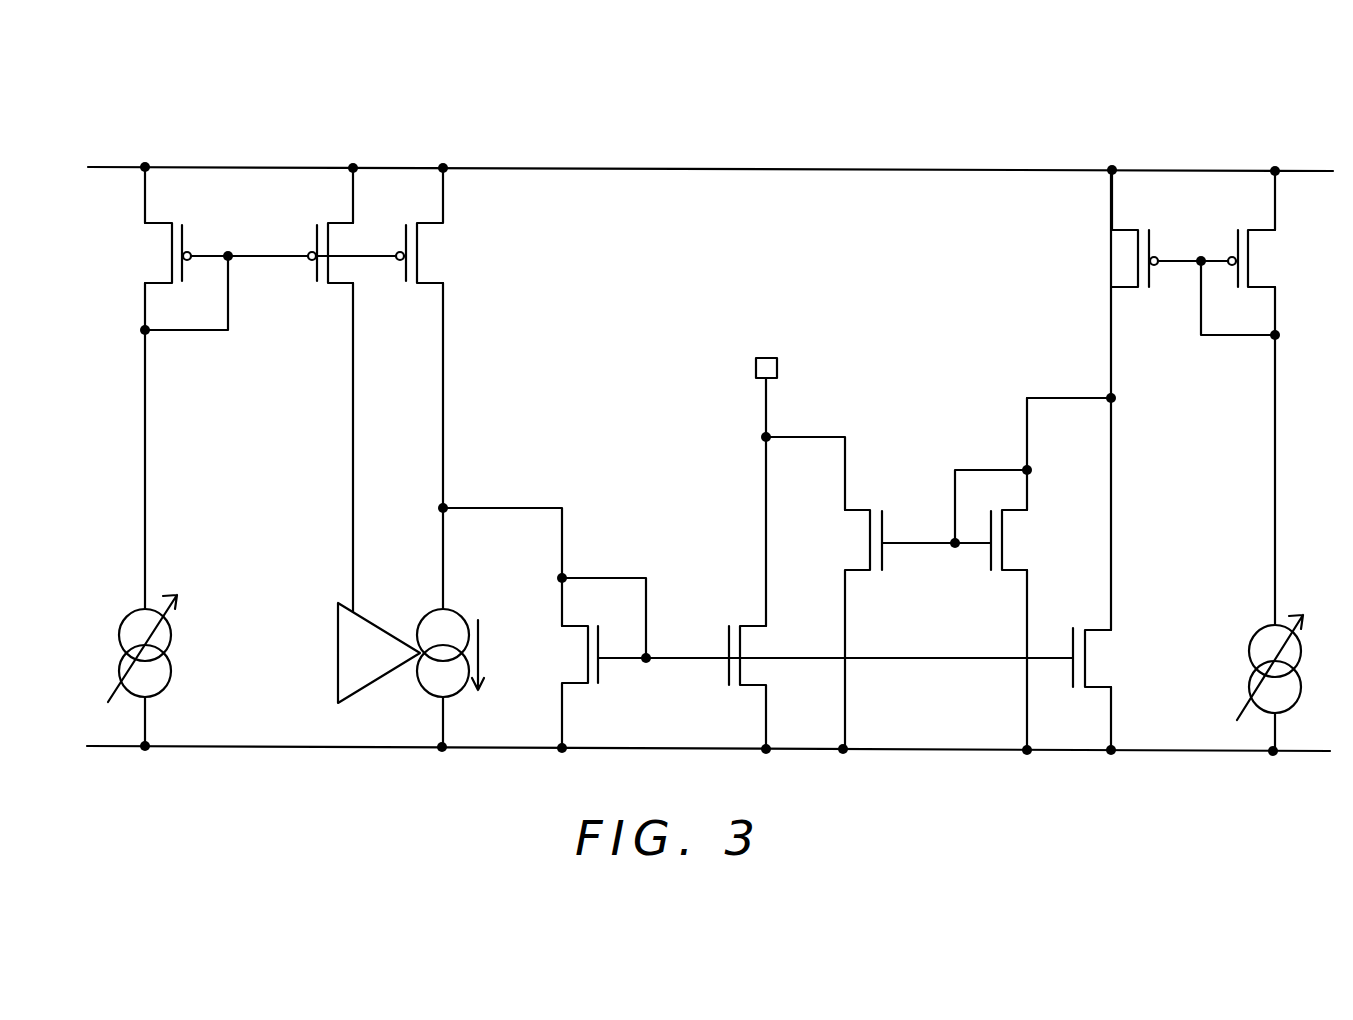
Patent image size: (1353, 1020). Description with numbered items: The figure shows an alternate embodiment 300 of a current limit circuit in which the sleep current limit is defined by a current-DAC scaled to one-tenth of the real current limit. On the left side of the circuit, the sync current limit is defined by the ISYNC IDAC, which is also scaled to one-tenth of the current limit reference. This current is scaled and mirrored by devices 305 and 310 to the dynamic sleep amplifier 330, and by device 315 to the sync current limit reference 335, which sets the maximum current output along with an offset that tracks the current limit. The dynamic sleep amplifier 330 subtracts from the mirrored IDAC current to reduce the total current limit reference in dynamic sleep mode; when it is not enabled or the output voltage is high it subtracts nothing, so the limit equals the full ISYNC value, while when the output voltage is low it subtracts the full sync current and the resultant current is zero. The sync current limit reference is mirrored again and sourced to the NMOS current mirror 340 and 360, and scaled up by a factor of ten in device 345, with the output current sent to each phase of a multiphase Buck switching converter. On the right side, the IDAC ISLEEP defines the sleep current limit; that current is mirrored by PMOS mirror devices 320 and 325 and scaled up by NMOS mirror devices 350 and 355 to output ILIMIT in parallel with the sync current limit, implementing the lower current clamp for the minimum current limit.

The alternate embodiment 300 is at (243, 77).
The device 305 is at (192, 237).
The device 310 is at (368, 236).
The device 315 is at (458, 236).
The PMOS mirror device 320 is at (1160, 240).
The PMOS mirror device 325 is at (1295, 240).
The dynamic sleep amplifier 330 is at (383, 628).
The sync current limit reference 335 is at (460, 612).
The NMOS current mirror 340 is at (577, 688).
The device 345 is at (780, 638).
The NMOS mirror device 350 is at (890, 522).
The NMOS mirror device 355 is at (1048, 522).
The NMOS current mirror 360 is at (1132, 650).